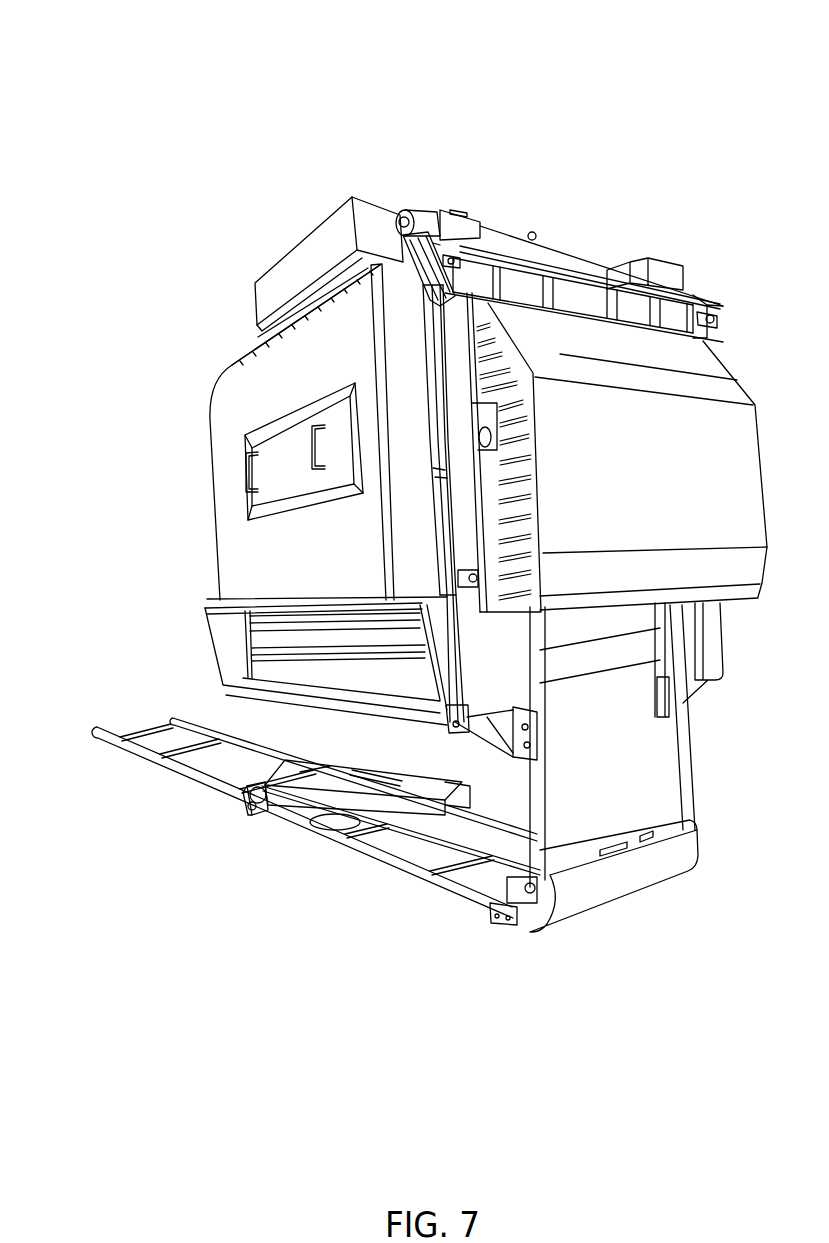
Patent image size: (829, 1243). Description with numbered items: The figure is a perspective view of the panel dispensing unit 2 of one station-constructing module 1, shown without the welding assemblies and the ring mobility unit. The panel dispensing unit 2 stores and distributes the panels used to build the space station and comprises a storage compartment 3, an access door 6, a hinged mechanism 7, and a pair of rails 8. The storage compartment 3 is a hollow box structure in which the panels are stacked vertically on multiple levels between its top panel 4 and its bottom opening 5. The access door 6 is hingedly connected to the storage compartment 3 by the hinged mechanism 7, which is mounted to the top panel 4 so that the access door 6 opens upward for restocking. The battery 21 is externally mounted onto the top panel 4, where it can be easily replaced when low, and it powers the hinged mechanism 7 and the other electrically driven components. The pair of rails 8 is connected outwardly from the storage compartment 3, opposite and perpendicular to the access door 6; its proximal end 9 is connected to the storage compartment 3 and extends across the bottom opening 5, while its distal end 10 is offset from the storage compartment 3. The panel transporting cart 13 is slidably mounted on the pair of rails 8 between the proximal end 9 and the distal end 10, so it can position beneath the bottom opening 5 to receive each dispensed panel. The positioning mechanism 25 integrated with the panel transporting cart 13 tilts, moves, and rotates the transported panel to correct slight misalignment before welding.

The station-constructing module 1 is at (590, 150).
The panel dispensing unit 2 is at (178, 453).
The storage compartment 3 is at (228, 536).
The top panel 4 is at (251, 343).
The bottom opening 5 is at (567, 727).
The access door 6 is at (755, 464).
The hinged mechanism 7 is at (425, 214).
The pair of rails 8 is at (97, 727).
The proximal end 9 is at (517, 956).
The distal end 10 is at (116, 772).
The panel transporting cart 13 is at (247, 813).
The battery 21 is at (309, 236).
The positioning mechanism 25 is at (353, 763).